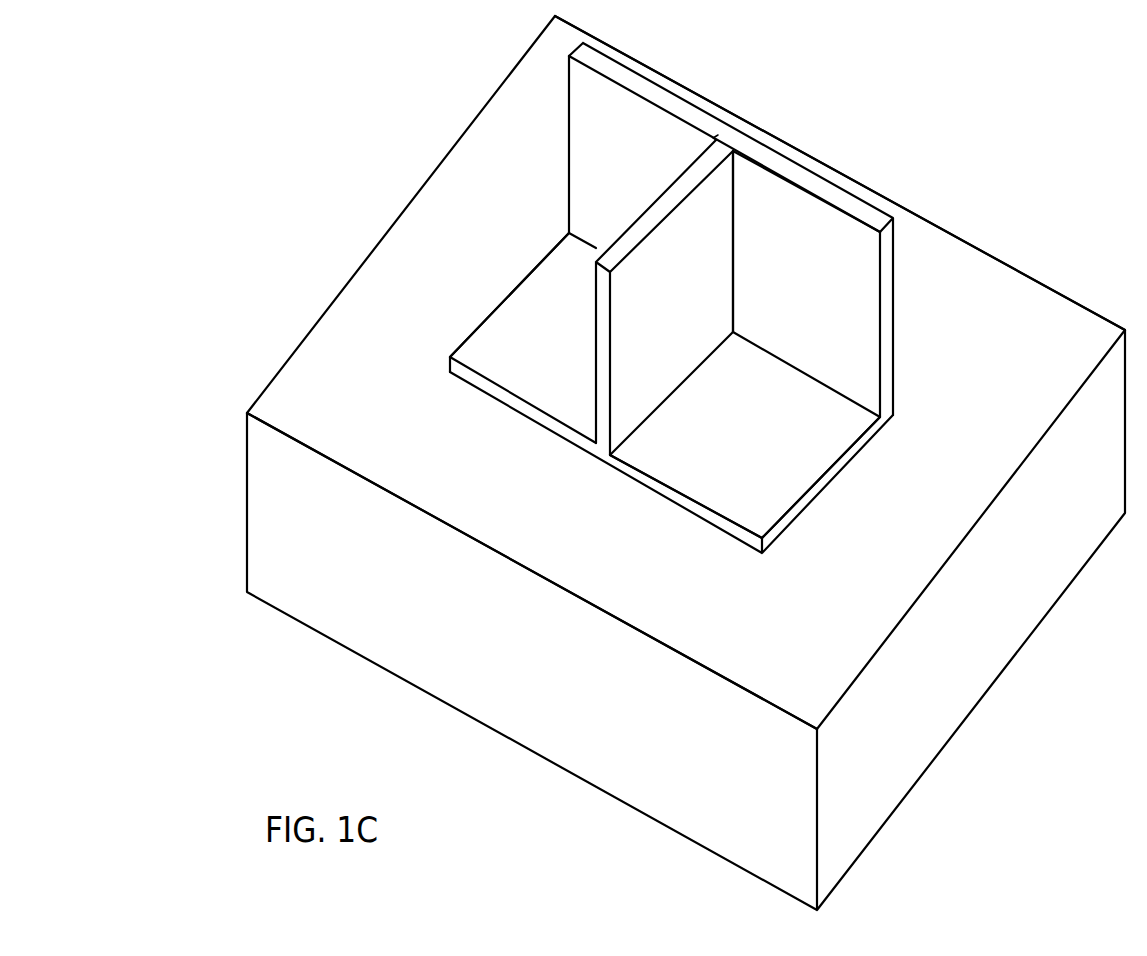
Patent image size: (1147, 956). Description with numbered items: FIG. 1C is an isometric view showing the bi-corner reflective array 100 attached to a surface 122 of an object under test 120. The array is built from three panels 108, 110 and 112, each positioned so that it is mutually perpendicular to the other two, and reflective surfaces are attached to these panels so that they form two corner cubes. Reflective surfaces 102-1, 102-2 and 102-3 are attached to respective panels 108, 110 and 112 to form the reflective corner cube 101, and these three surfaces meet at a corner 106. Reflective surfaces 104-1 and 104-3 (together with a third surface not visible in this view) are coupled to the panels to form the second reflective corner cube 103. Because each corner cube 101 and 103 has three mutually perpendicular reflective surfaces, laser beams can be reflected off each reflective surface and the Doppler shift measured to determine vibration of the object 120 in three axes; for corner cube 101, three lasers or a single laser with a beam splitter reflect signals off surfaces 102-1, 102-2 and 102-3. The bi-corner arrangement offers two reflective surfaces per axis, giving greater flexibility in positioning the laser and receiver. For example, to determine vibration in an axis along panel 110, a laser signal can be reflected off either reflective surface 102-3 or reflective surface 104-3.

The bi-corner reflective array 100 is at (912, 218).
The reflective corner cube 101 is at (790, 443).
The reflective surface 102-1 is at (751, 460).
The reflective surface 102-2 is at (683, 308).
The reflective surface 102-3 is at (819, 293).
The reflective corner cube 103 is at (543, 302).
The reflective surface 104-1 is at (562, 350).
The reflective surface 104-3 is at (642, 155).
The corner 106 is at (733, 333).
The panel 108 is at (830, 485).
The panel 110 is at (786, 163).
The panel 112 is at (682, 193).
The object under test 120 is at (327, 273).
The surface 122 is at (781, 640).